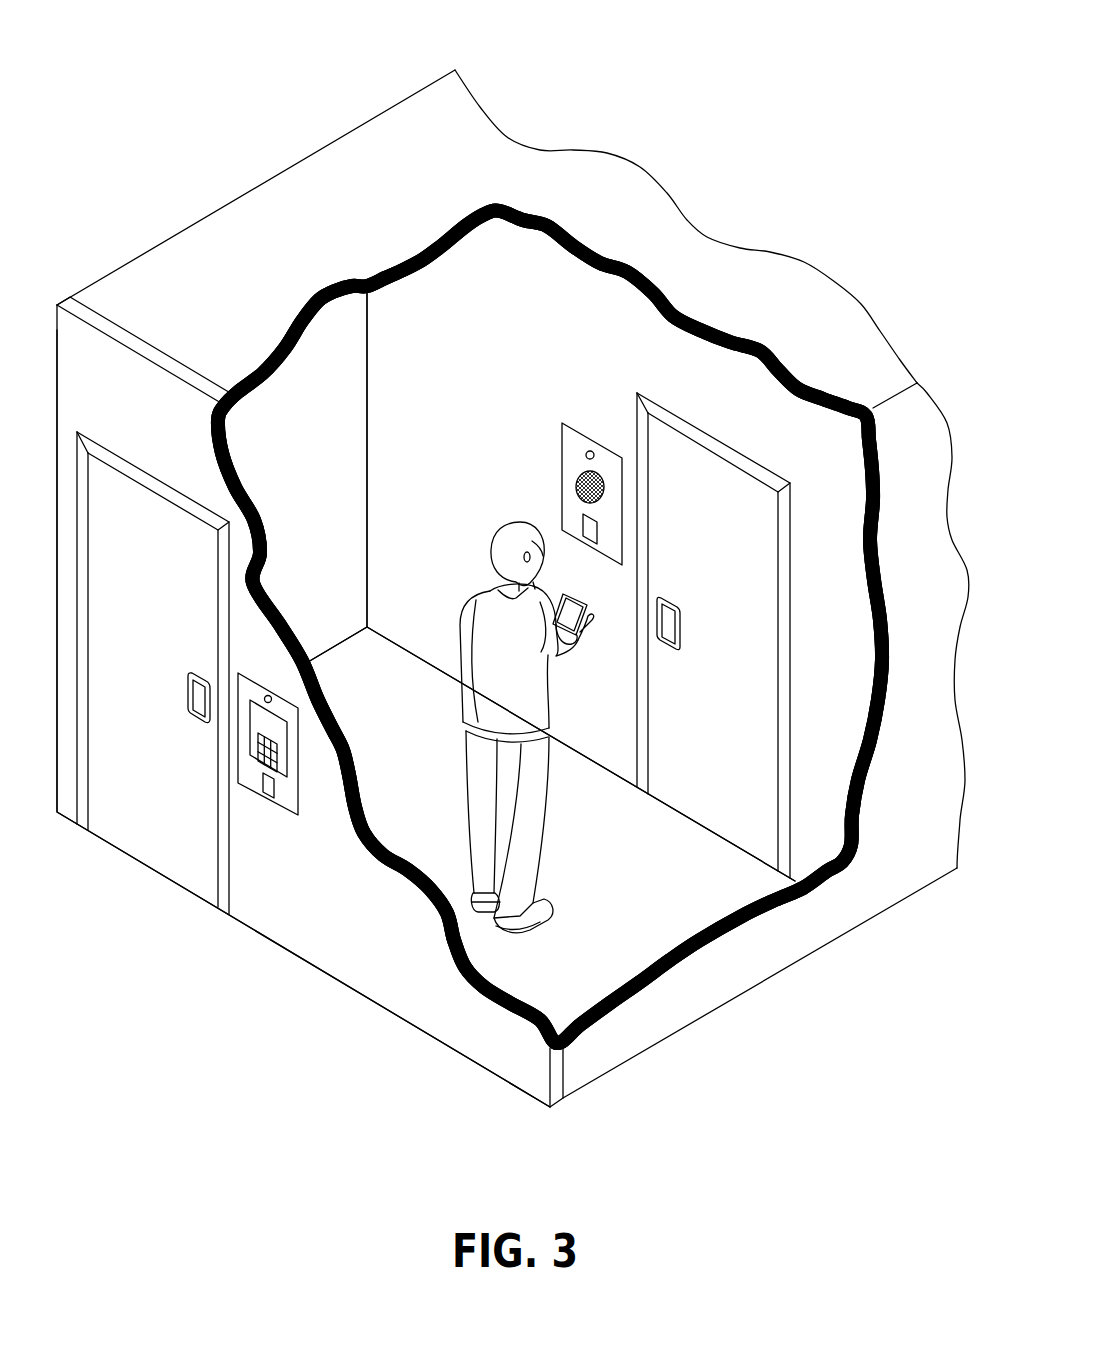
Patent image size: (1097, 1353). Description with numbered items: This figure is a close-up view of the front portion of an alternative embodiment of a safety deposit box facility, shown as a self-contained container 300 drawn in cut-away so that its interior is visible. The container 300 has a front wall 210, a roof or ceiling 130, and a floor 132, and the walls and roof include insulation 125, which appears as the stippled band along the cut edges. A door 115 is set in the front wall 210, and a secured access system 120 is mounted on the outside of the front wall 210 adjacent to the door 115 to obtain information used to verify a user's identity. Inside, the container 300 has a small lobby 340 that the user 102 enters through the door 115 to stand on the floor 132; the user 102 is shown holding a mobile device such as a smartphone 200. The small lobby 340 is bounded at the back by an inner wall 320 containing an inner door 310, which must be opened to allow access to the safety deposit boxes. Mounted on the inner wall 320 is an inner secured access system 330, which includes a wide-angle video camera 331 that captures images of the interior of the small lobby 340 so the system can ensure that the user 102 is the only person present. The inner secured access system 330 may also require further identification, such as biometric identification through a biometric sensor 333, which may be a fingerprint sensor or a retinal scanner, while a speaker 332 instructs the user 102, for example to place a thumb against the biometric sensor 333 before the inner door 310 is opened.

The container 300 is at (751, 121).
The user 102 is at (482, 603).
The door 115 is at (132, 610).
The secured access system 120 is at (263, 822).
The insulation 125 is at (421, 259).
The roof or ceiling 130 is at (225, 280).
The floor 132 is at (613, 910).
The smartphone 200 is at (588, 614).
The front wall 210 is at (364, 952).
The inner door 310 is at (692, 573).
The inner wall 320 is at (422, 399).
The inner secured access system 330 is at (543, 444).
The wide-angle video camera 331 is at (590, 450).
The speaker 332 is at (576, 485).
The biometric sensor 333 is at (583, 527).
The small lobby 340 is at (338, 348).